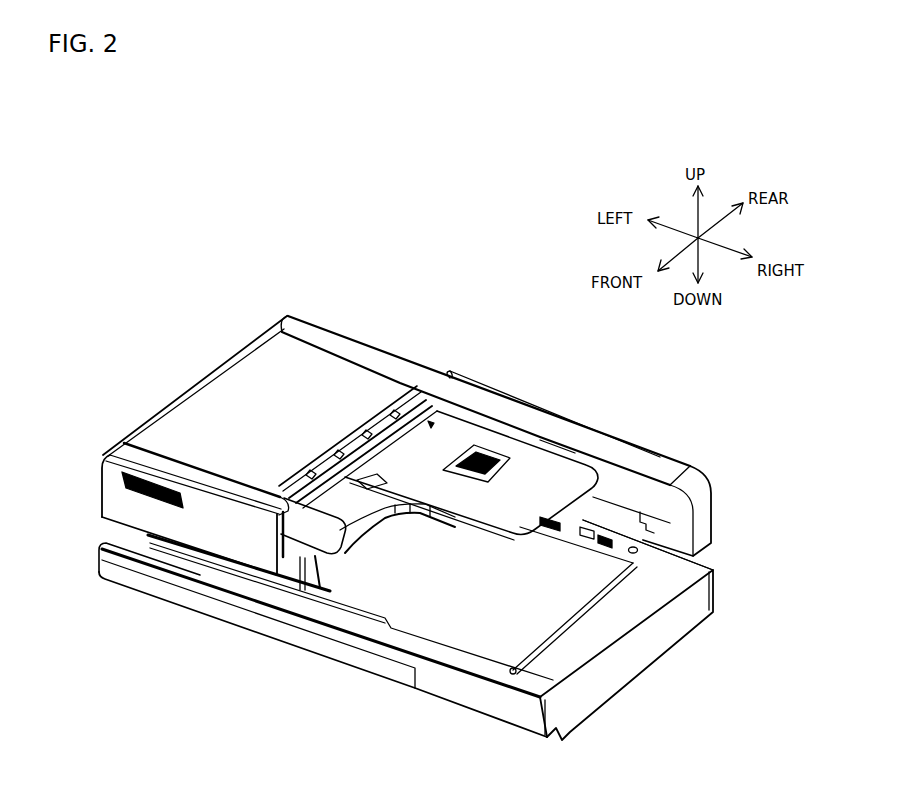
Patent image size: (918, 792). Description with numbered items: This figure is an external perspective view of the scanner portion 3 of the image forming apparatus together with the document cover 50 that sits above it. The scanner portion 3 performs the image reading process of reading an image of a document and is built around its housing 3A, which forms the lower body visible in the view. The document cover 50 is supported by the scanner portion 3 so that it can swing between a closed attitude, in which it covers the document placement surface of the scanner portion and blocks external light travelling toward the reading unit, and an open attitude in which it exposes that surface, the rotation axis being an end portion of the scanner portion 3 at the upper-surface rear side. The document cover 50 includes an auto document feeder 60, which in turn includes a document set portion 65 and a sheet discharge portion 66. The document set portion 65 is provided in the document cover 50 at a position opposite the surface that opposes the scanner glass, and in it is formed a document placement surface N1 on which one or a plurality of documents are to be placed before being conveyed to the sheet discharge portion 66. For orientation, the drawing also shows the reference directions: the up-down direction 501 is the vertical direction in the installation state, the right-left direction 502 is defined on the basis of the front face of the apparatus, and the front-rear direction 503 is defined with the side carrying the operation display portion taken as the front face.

The scanner portion 3 is at (738, 576).
The housing 3A is at (99, 550).
The document cover 50 is at (698, 453).
The auto document feeder (ADF) 60 is at (237, 393).
The document set portion 65 is at (479, 432).
The sheet discharge portion 66 is at (476, 580).
The document placement surface N1 is at (536, 472).
The up-down direction 501 is at (690, 213).
The right-left direction 502 is at (662, 237).
The front-rear direction 503 is at (717, 231).